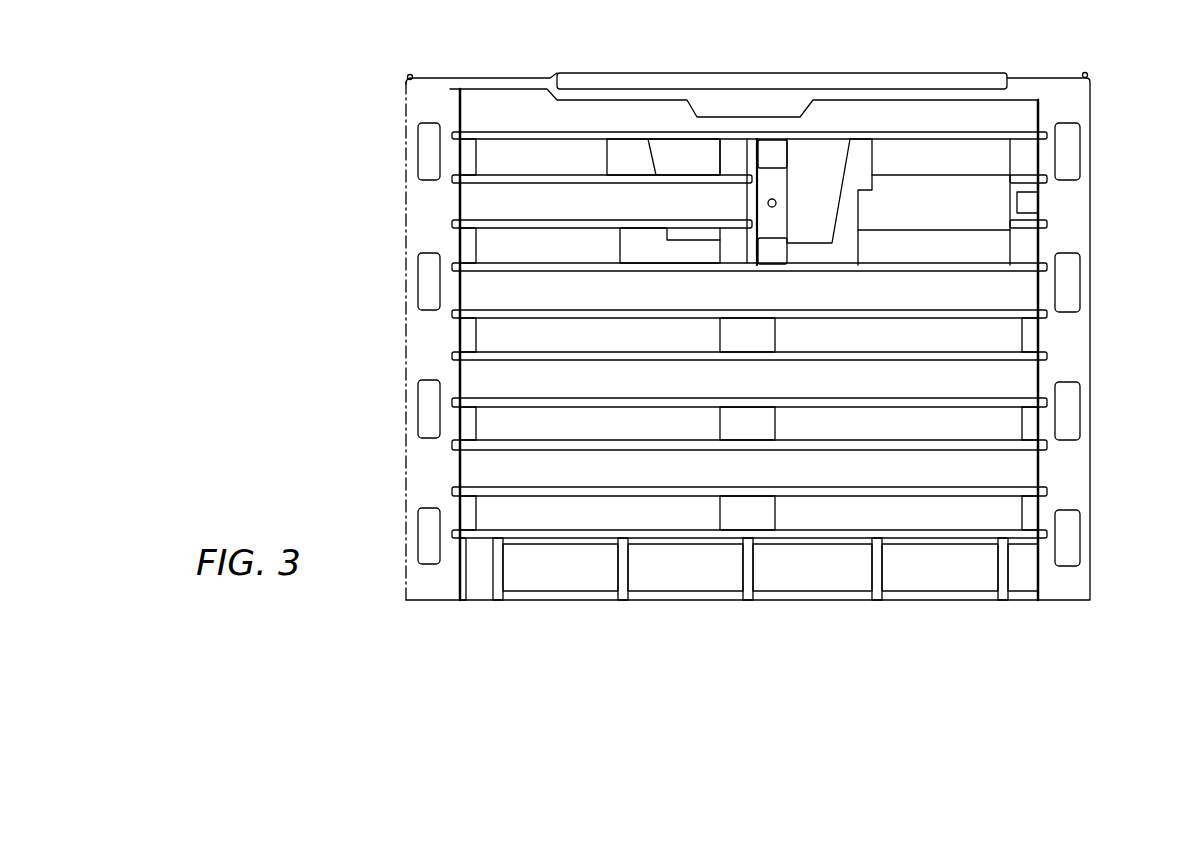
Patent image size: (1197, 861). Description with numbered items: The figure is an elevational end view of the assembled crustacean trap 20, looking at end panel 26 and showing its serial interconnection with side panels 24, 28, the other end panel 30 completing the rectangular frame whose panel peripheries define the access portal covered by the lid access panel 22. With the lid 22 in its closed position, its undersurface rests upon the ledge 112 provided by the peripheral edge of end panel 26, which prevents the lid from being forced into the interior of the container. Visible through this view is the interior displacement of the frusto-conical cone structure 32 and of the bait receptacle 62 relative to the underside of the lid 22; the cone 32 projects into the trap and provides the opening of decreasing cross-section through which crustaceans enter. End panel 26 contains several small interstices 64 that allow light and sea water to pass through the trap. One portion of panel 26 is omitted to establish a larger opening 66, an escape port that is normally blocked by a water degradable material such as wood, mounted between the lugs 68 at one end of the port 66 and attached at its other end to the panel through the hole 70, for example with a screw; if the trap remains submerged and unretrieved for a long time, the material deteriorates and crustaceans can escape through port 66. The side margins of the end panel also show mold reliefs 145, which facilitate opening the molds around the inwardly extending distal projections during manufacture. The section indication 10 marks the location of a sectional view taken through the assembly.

The section line 10 is at (748, 62).
The crustacean trap 20 is at (872, 59).
The lid access panel 22 is at (946, 78).
The side panel 24 is at (418, 285).
The end panel 26 is at (1092, 212).
The side panel 28 is at (1070, 285).
The end panel 30 is at (918, 175).
The frusto-conical structure 32 is at (670, 160).
The bait receptacle 62 is at (620, 250).
The interstices 64 is at (625, 435).
The opening 66 is at (958, 259).
The lugs 68 is at (1027, 181).
The hole 70 is at (778, 204).
The ledge 112 is at (617, 88).
The mold relief 145 is at (418, 158).